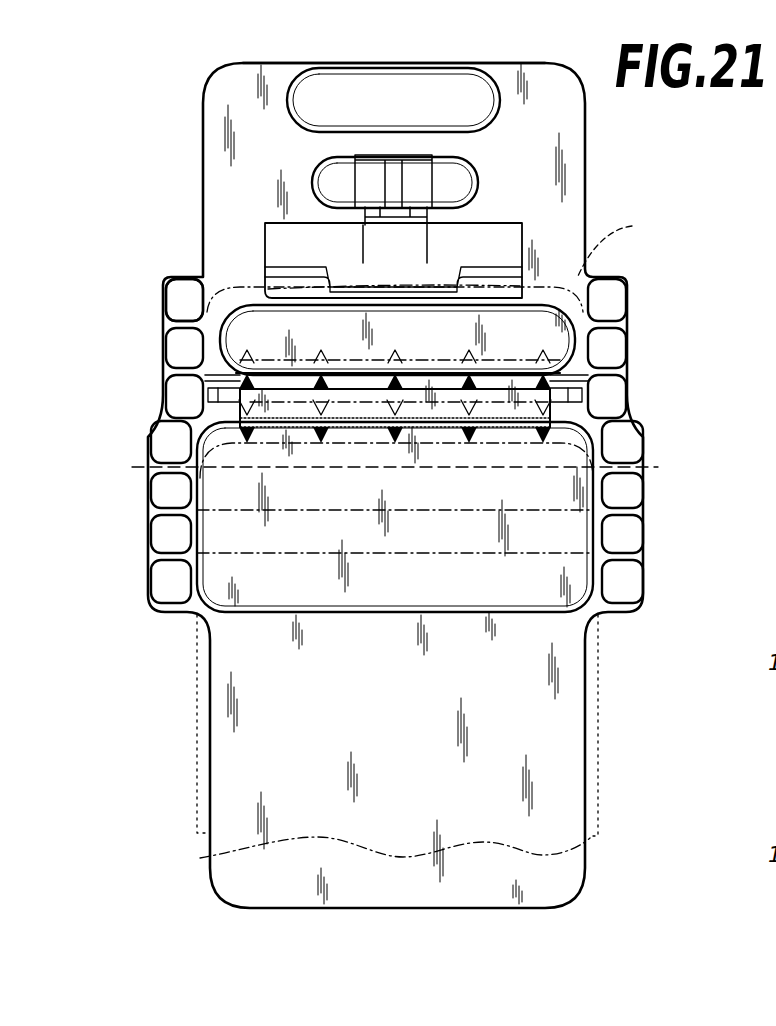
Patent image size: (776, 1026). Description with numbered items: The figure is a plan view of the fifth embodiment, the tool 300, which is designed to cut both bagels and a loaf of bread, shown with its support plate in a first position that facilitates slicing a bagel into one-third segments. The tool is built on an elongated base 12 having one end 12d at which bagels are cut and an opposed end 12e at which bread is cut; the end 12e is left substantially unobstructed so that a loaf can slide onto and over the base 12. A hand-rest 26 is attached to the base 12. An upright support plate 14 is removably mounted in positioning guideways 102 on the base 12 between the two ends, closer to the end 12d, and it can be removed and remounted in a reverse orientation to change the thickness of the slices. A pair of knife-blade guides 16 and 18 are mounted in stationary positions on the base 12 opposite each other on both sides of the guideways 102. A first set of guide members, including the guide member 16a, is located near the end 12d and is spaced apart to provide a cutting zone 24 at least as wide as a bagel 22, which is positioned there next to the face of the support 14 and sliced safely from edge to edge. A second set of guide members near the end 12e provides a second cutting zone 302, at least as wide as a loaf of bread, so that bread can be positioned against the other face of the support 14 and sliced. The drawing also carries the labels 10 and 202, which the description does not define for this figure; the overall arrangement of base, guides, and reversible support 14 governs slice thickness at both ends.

The scraper tool 10 is at (767, 364).
The base 12 is at (238, 749).
The end of base 12d is at (243, 73).
The opposed end of base 12e is at (228, 842).
The upright support plate 14 is at (339, 410).
The knife-blade guide 16 is at (141, 513).
The guide member 16a is at (184, 291).
The knife-blade guide 18 is at (662, 503).
The bagel 22 is at (436, 260).
The cutting zone 24 is at (246, 303).
The hand-rest 26 is at (361, 80).
The positioning guideways 102 is at (222, 393).
The blade carrier 202 is at (233, 323).
The tool 300 is at (597, 797).
The second cutting zone 302 is at (515, 588).